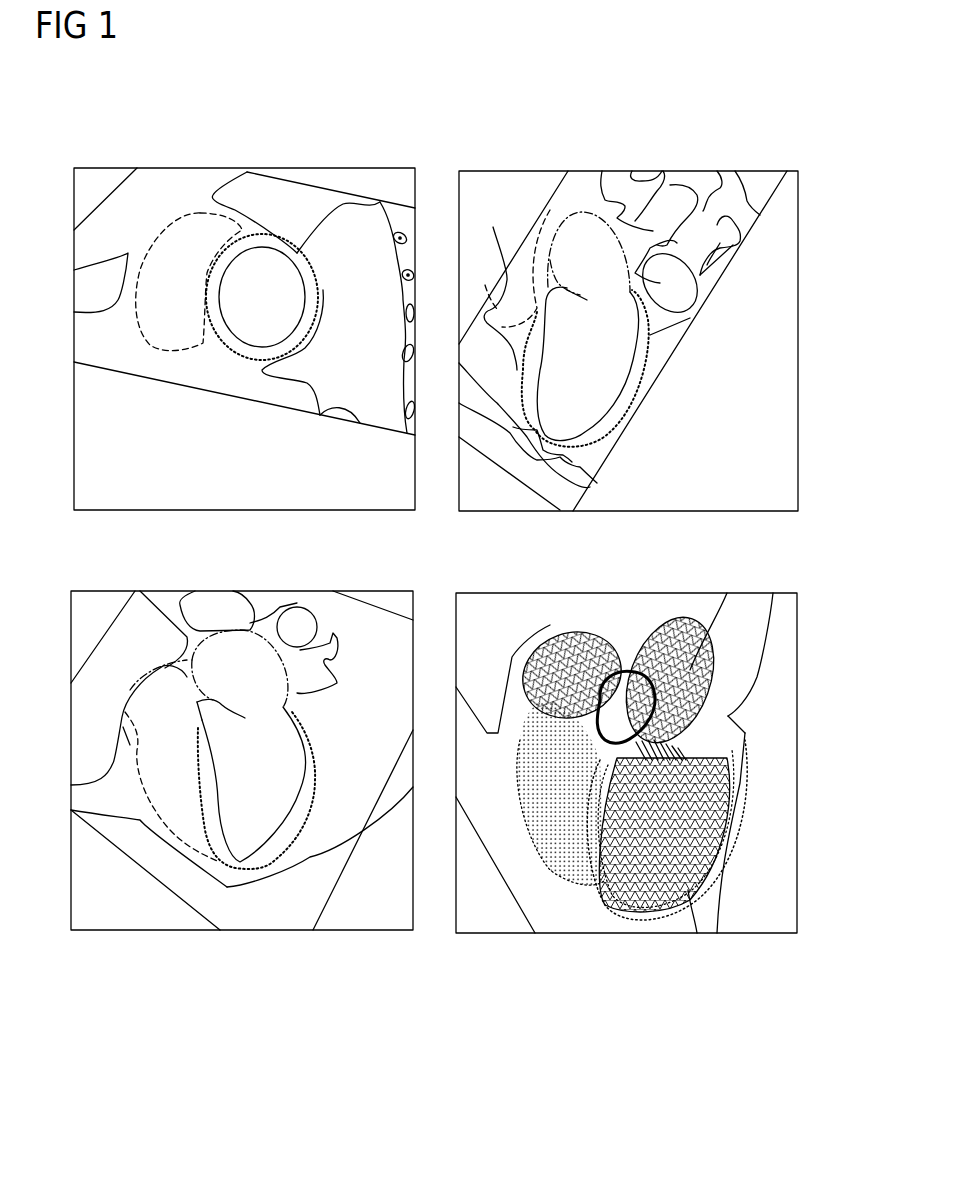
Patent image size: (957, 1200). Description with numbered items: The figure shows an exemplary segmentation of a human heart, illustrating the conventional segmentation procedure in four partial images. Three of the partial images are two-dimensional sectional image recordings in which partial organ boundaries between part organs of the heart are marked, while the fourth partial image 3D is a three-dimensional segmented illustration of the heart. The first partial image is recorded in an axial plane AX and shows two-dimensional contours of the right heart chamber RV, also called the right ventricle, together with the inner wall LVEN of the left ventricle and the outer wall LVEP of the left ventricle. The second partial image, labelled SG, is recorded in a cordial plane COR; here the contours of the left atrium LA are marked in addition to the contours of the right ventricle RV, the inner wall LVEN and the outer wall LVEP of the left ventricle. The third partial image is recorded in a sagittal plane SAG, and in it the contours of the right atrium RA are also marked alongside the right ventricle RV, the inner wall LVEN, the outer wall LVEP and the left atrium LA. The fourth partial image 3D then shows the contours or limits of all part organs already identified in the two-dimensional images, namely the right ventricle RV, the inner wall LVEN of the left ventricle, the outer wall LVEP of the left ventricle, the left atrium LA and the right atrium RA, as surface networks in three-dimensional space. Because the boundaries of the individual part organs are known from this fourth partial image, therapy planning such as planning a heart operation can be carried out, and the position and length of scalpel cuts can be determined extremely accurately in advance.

The axial plane AX is at (155, 157).
The short-axis (oblique) image slice SG is at (737, 157).
The sagittal plane SAG is at (133, 940).
The fourth partial image 3D is at (617, 993).
The right heart chamber RV is at (193, 207).
The inner wall of the left ventricle LVEN is at (268, 247).
The outer wall of the left ventricle LVEP is at (297, 253).
The left atrium LA is at (577, 212).
The right atrium RA is at (125, 712).
The cordial plane COR is at (493, 227).